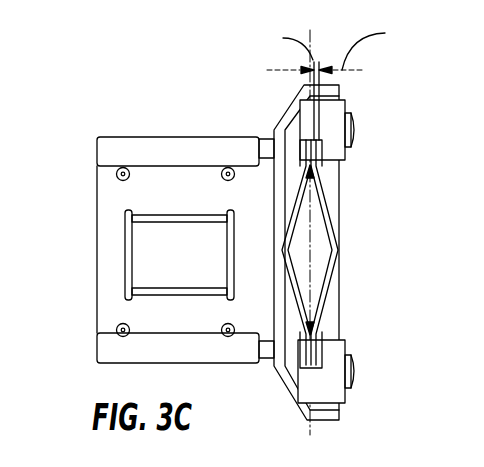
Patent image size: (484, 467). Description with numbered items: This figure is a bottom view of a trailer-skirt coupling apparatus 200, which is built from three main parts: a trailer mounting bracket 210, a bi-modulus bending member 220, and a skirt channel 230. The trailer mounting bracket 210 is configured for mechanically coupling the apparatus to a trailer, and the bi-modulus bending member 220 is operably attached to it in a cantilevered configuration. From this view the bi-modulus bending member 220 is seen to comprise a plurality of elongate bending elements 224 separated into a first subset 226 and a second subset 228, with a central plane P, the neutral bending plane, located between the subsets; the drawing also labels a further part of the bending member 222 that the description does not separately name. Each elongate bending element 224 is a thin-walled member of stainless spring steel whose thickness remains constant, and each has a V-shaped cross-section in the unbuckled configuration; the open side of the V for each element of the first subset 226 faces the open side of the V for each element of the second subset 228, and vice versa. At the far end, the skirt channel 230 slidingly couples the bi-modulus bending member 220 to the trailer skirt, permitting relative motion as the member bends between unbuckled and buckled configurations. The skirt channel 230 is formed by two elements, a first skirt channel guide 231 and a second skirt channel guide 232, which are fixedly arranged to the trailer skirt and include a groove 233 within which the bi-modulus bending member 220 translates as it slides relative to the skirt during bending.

The trailer-skirt coupling apparatus 200 is at (140, 66).
The trailer mounting bracket 210 is at (142, 135).
The bi-modulus bending member 220 is at (336, 204).
The blade 222 is at (333, 267).
The elongate bending elements 224 is at (337, 248).
The first subset 226 is at (296, 192).
The second subset 228 is at (323, 185).
The skirt channel 230 is at (296, 106).
The first skirt channel guide 231 is at (339, 108).
The second skirt channel guide 232 is at (346, 352).
The groove 233 is at (320, 147).